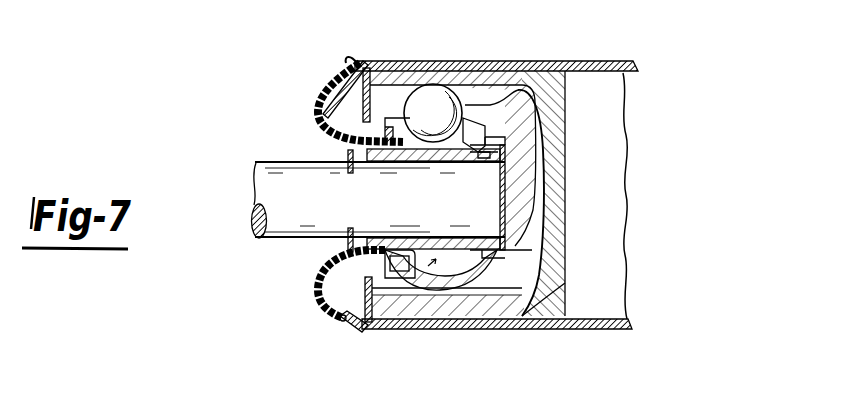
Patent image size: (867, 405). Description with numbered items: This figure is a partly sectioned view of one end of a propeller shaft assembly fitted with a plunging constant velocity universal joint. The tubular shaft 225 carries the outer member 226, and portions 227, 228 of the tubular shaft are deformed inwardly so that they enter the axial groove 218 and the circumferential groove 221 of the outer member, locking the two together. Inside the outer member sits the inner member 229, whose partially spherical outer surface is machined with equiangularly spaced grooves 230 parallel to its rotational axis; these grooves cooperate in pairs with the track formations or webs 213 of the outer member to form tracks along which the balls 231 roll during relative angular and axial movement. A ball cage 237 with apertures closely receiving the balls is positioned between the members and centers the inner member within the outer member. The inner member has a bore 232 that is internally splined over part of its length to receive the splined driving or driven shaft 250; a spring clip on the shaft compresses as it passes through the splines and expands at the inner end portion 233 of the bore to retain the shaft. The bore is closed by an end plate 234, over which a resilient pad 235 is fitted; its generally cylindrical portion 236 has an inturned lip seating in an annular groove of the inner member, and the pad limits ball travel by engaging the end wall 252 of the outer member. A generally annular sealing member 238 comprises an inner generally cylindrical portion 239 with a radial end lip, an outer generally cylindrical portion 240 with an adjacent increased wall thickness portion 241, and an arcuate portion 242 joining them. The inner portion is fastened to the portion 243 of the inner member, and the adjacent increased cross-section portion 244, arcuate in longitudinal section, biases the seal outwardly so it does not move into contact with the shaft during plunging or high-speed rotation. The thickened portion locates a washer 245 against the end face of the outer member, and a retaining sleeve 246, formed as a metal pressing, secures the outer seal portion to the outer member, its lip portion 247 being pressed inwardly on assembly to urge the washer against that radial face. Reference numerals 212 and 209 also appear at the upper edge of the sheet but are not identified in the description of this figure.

The partial numeral from adjacent figure 212 is at (167, 0).
The partial numeral from adjacent figure 209 is at (576, 9).
The track formations 213 is at (468, 128).
The axial groove 218 is at (548, 300).
The circumferential groove 221 is at (502, 134).
The tubular shaft 225 is at (622, 336).
The outer member 226 is at (450, 320).
The deformed portion of tubular shaft 227 is at (522, 323).
The deformed portion of tubular shaft 228 is at (540, 63).
The inner member 229 is at (350, 286).
The grooves 230 is at (498, 108).
The balls 231 is at (442, 100).
The bore 232 is at (398, 162).
The inner end portion of bore 233 is at (505, 178).
The end plate 234 is at (546, 197).
The resilient pad 235 is at (546, 232).
The generally cylindrical portion 236 is at (508, 265).
The ball cage 237 is at (405, 96).
The sealing member 238 is at (328, 263).
The inner generally cylindrical portion 239 is at (388, 262).
The outer generally cylindrical portion 240 is at (384, 60).
The increased wall thickness portion 241 is at (352, 60).
The arcuate portion 242 is at (319, 97).
The inner member portion 243 is at (350, 163).
The increased cross-section portion 244 is at (368, 248).
The washer 245 is at (323, 115).
The retaining sleeve 246 is at (357, 335).
The lip portion 247 is at (340, 318).
The driving or driven shaft 250 is at (320, 199).
The end wall 252 is at (553, 141).